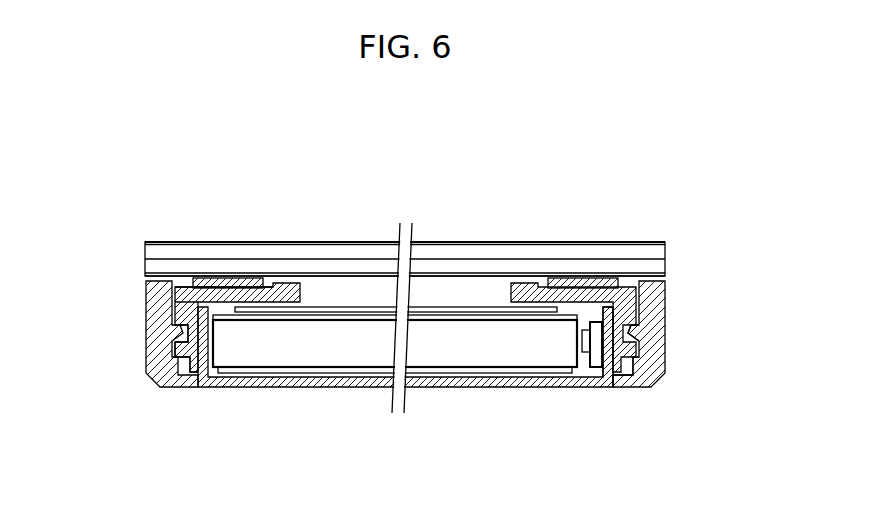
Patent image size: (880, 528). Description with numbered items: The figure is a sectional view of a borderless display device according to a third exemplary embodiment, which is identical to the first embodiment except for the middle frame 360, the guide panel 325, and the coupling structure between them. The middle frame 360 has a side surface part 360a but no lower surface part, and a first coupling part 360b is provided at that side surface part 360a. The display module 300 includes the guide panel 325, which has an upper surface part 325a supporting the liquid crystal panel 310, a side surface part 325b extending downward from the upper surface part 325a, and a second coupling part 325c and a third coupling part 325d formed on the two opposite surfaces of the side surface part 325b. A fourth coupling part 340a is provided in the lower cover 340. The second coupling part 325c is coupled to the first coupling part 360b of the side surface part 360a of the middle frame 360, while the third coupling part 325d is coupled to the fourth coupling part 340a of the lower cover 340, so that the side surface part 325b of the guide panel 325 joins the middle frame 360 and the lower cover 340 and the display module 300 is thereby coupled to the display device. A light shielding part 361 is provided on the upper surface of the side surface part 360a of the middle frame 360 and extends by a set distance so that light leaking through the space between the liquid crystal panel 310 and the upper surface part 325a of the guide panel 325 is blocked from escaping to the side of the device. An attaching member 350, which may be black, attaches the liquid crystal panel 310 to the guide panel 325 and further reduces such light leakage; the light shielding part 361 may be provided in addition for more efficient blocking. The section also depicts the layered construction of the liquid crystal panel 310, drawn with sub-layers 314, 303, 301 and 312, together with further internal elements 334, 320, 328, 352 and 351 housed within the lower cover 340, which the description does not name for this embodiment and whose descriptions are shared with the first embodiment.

The display module 300 is at (403, 308).
The liquid crystal panel 310 is at (405, 210).
The lower layer of panel stack 312 is at (362, 176).
The middle layer of panel stack 301 is at (206, 265).
The attaching member 350 is at (245, 284).
The upper intermediate layer 303 is at (325, 250).
The cover window 314 is at (357, 241).
The light shielding part 361 is at (655, 284).
The middle frame 360 is at (467, 326).
The first coupling part 360b is at (637, 337).
The side surface part 360a is at (655, 358).
The guide panel 325 is at (327, 342).
The upper surface part 325a is at (217, 296).
The second coupling part 325c is at (180, 336).
The side surface part 325b is at (185, 353).
The third coupling part 325d is at (133, 379).
The display module 320 is at (262, 347).
The lower cover 340 is at (433, 389).
The fourth coupling part 340a is at (628, 366).
The rear plate 328 is at (351, 371).
The optical sheet layer 334 is at (472, 330).
The spacer 352 is at (583, 350).
The side support member 351 is at (595, 362).